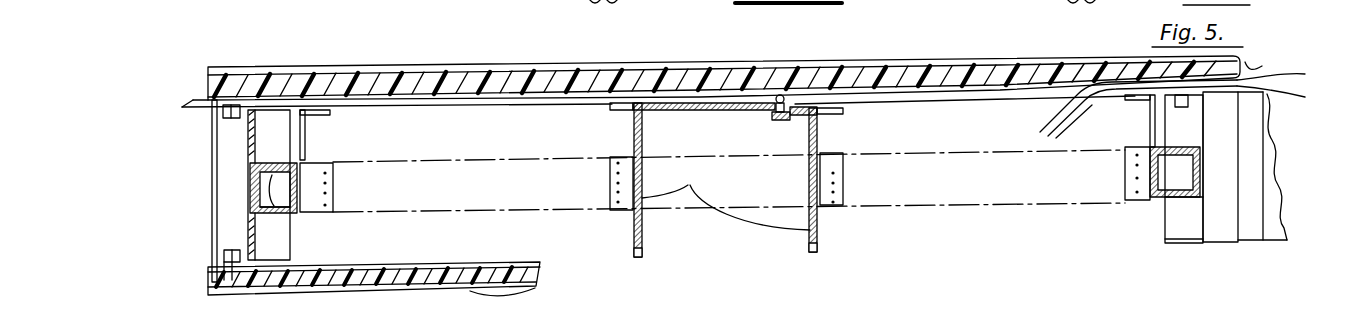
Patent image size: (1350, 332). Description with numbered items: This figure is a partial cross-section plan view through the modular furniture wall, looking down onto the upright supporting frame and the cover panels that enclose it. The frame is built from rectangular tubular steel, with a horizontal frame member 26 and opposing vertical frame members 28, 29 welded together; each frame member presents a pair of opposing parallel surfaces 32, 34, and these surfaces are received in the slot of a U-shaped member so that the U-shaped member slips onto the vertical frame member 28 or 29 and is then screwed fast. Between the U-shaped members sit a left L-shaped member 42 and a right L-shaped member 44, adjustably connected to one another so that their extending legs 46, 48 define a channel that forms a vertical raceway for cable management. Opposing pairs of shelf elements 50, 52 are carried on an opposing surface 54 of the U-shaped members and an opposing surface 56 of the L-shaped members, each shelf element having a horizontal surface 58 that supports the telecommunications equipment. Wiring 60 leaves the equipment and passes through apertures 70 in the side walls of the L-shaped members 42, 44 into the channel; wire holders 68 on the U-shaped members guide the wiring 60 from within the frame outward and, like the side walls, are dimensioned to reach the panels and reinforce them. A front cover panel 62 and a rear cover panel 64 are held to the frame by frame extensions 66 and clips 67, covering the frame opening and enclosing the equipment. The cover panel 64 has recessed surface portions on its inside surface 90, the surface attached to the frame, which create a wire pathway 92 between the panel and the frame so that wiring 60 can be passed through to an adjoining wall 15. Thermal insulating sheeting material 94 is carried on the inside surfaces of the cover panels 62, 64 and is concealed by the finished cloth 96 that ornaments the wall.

The adjoining wall 15 is at (1259, 247).
The horizontal frame member 26 is at (450, 182).
The vertical frame member 28 is at (246, 190).
The vertical frame member 29 is at (1167, 208).
The parallel surface 32 is at (267, 173).
The parallel surface 34 is at (287, 211).
The left L-shaped member 42 is at (626, 222).
The right L-shaped member 44 is at (825, 253).
The extending leg 46 is at (641, 138).
The extending leg 48 is at (818, 137).
The shelf element 50 is at (310, 200).
The shelf element 52 is at (610, 170).
The opposing surface 54 is at (307, 158).
The opposing surface 56 is at (633, 136).
The horizontal surface 58 is at (322, 168).
The wiring 60 is at (1063, 108).
The front cover panel 62 is at (533, 288).
The rear cover panel 64 is at (724, 156).
The frame extension 66 is at (230, 143).
The clip 67 is at (214, 130).
The wire holder 68 is at (263, 147).
The aperture 70 is at (726, 195).
The inside surface 90 is at (1026, 85).
The wire pathway 92 is at (1284, 79).
The thermal insulating sheeting material 94 is at (424, 107).
The finished cloth 96 is at (267, 67).